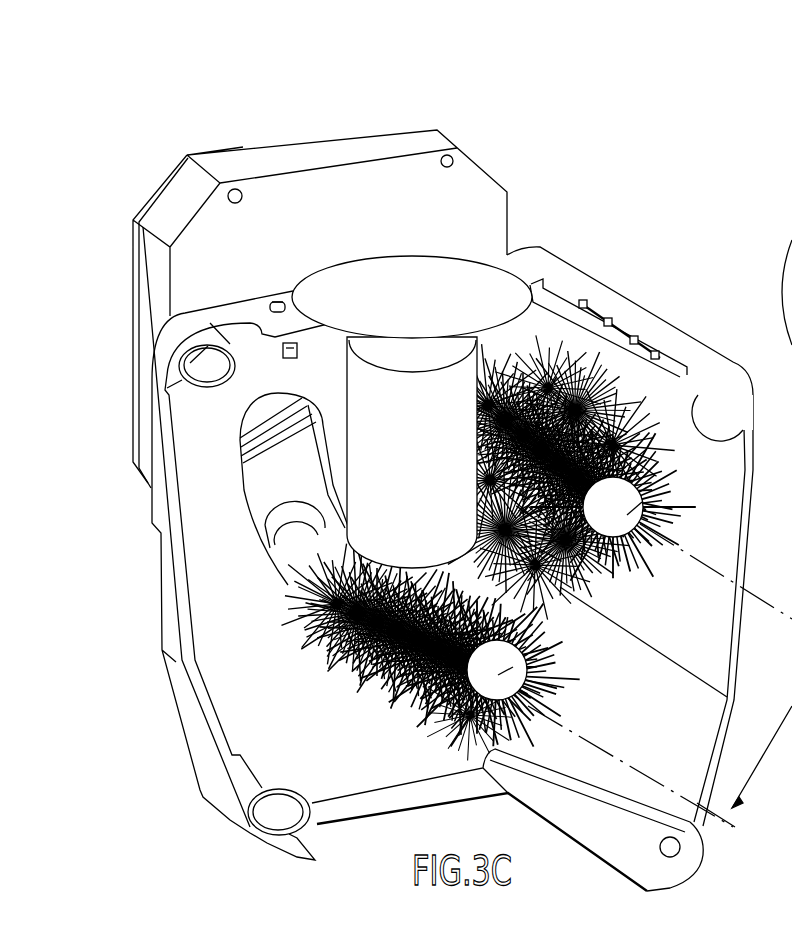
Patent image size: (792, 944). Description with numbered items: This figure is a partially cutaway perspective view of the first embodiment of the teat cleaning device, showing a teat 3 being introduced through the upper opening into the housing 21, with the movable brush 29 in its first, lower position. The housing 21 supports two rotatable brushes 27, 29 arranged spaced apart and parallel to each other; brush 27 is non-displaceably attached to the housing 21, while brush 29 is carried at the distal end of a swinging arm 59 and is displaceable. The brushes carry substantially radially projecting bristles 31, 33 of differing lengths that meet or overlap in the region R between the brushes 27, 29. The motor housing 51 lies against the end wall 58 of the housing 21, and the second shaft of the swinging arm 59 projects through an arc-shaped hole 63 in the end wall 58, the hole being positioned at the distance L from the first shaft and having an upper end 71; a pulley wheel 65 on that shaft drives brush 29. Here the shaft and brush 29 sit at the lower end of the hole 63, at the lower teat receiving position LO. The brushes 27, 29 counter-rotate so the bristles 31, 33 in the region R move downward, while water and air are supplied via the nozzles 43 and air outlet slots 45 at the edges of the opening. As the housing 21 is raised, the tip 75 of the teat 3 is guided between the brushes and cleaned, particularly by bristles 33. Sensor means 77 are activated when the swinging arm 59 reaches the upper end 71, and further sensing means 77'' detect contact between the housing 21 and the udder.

The teat 3 is at (417, 305).
The housing 21 is at (617, 306).
The brush 27 is at (642, 496).
The brush 29 is at (553, 672).
The bristles 31 is at (672, 462).
The bristles 33 is at (403, 727).
The nozzles 43 is at (583, 302).
The air outlet slots 45 is at (657, 353).
The motor housing 51 is at (476, 182).
The end wall 58 is at (188, 417).
The swinging arm 59 is at (335, 507).
The hole 63 is at (257, 487).
The pulley wheel 65 is at (293, 443).
The upper end 71 is at (283, 405).
The tip 75 is at (401, 545).
The sensor means 77 is at (269, 358).
The further sensing means 77'' is at (281, 277).
The region R is at (552, 585).
The lower teat receiving position LO is at (316, 703).
The distance L is at (744, 766).